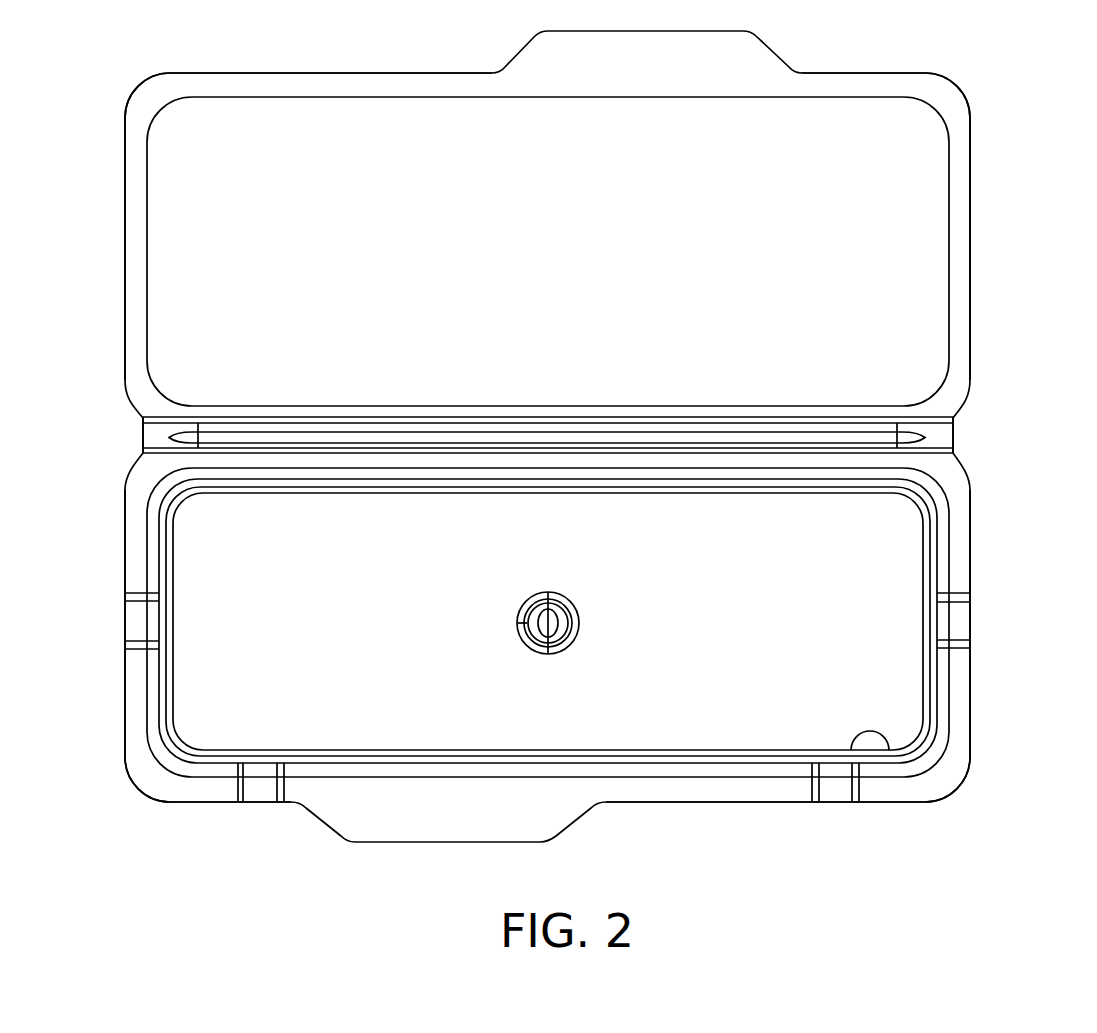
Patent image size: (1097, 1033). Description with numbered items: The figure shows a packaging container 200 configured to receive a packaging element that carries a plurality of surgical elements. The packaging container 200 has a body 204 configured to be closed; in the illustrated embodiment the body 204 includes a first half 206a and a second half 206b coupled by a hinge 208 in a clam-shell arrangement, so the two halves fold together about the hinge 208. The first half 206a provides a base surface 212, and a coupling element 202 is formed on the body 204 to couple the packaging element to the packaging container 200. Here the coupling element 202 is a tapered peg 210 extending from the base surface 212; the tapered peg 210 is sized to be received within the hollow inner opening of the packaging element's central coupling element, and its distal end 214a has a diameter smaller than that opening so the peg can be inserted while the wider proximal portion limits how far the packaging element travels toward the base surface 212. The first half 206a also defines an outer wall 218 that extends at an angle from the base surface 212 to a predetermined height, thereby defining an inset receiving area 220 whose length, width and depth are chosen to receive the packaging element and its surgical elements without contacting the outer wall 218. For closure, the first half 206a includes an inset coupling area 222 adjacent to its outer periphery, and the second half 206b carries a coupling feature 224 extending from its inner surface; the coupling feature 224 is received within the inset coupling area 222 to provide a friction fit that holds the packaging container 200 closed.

The packaging container 200 is at (998, 118).
The coupling element 202 is at (556, 628).
The body 204 is at (963, 487).
The first half 206a is at (965, 703).
The second half 206b is at (968, 327).
The hinge 208 is at (152, 435).
The tapered peg 210 is at (560, 630).
The base surface 212 is at (865, 623).
The distal end 214a is at (522, 636).
The outer wall 218 is at (913, 749).
The inset receiving area 220 is at (780, 702).
The inset coupling area 222 is at (896, 753).
The coupling feature 224 is at (925, 220).